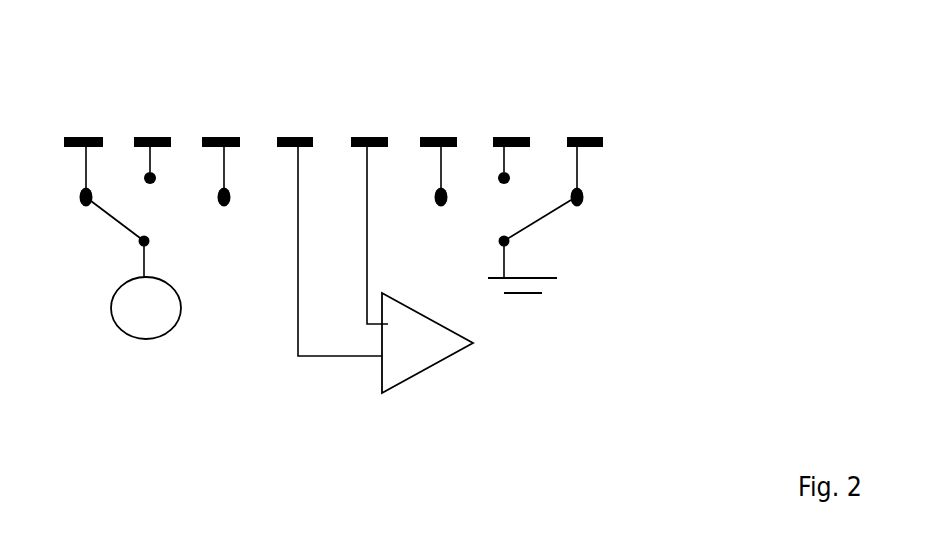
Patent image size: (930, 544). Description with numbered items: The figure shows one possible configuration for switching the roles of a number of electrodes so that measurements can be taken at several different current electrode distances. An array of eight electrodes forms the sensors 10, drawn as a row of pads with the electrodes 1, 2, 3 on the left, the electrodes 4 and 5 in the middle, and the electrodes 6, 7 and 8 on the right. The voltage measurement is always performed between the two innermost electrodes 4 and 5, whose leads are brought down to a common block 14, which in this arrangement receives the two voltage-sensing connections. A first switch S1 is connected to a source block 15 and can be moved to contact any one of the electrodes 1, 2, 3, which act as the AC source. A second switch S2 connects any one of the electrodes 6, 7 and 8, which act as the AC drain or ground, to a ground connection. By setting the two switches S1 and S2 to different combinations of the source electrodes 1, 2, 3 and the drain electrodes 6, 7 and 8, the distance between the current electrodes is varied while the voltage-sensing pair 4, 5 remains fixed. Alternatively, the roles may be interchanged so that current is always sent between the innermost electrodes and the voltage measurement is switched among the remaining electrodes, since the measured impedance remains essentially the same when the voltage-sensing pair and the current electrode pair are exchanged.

The electrode 1 is at (83, 148).
The electrode 2 is at (152, 137).
The electrode 3 is at (221, 148).
The electrode 4 is at (329, 223).
The electrode 5 is at (369, 207).
The electrode 6 is at (438, 148).
The electrode 7 is at (511, 137).
The electrode 8 is at (585, 148).
The sensors 10 is at (624, 141).
The amplifier 14 is at (427, 343).
The signal source 15 is at (146, 308).
The switch S1 is at (134, 239).
The switch S2 is at (525, 246).